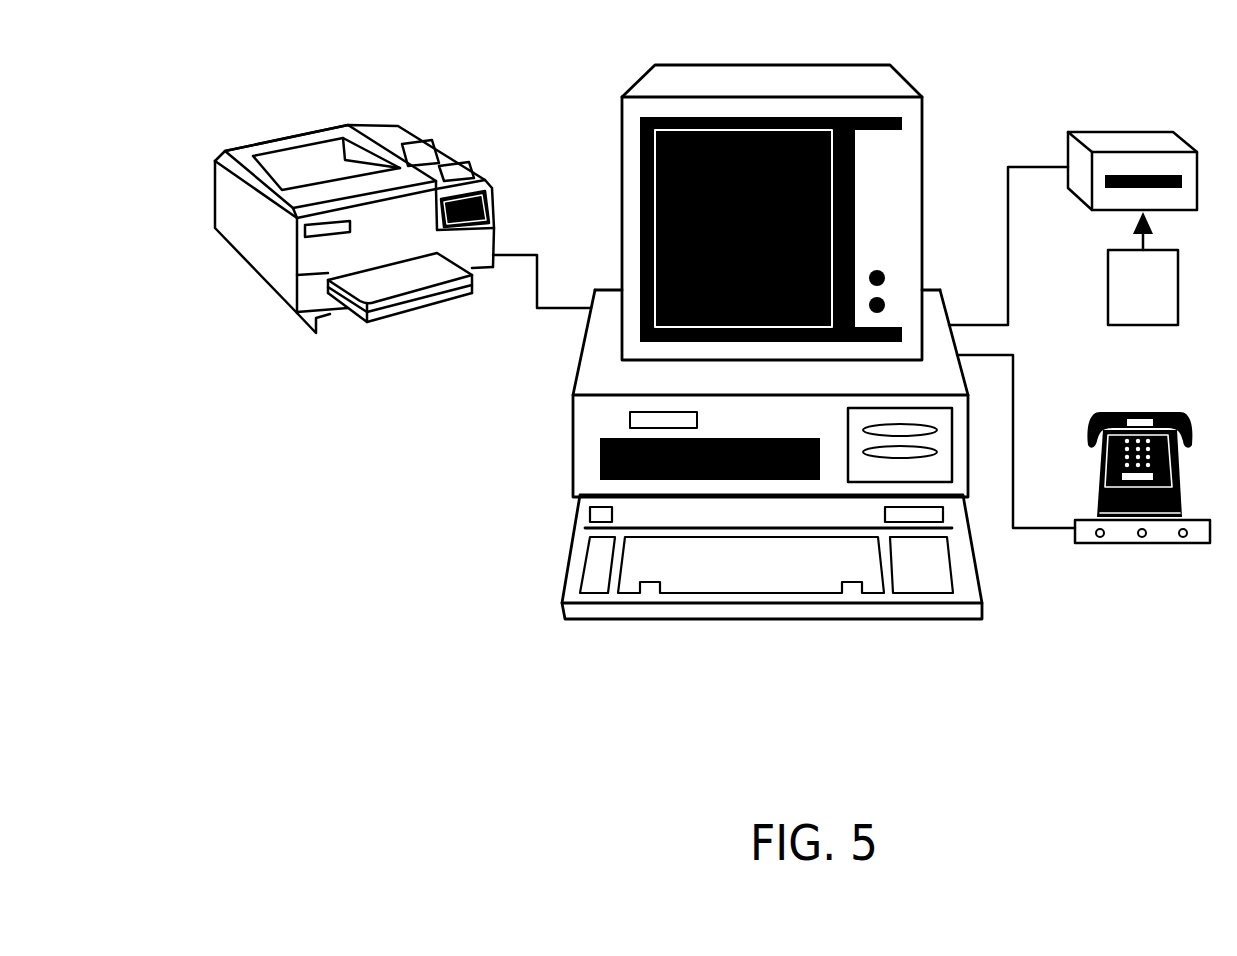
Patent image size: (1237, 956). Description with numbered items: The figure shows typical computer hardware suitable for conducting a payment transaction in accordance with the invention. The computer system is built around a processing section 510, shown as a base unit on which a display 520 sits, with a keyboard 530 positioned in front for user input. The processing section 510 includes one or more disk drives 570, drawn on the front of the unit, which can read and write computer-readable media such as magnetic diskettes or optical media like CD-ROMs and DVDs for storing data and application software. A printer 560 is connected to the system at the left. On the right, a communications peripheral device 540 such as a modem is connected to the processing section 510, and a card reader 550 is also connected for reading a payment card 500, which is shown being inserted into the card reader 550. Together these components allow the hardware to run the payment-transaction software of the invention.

The payment card 500 is at (1168, 303).
The processing section 510 is at (777, 360).
The display 520 is at (622, 113).
The keyboard 530 is at (875, 603).
The communications peripheral device 540 is at (1160, 545).
The card reader 550 is at (1068, 140).
The printer 560 is at (407, 317).
The disk drives 570 is at (920, 427).